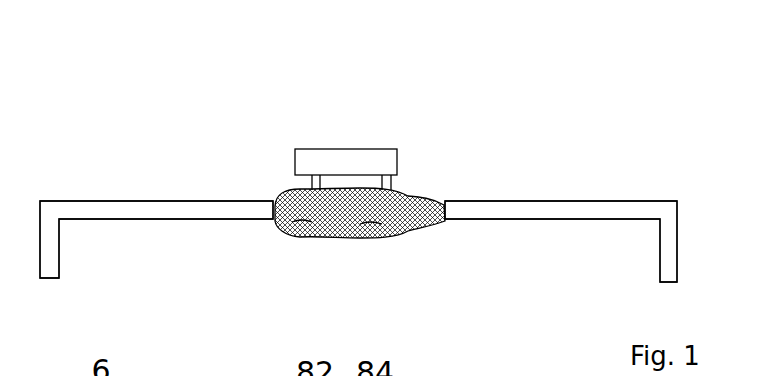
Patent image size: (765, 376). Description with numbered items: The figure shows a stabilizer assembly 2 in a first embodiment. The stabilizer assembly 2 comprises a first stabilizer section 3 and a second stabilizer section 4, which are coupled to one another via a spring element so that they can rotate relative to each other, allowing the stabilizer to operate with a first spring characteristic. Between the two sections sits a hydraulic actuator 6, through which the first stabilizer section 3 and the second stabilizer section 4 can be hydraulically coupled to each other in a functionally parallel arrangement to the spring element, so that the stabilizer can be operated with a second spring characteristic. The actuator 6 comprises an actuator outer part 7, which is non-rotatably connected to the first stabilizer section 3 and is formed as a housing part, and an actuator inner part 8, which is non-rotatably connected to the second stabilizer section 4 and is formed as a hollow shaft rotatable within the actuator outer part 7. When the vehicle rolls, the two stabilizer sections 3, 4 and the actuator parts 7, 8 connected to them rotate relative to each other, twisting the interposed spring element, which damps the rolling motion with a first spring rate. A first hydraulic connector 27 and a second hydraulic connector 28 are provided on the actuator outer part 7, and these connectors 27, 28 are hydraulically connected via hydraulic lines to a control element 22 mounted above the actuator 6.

The stabilizer assembly 2 is at (152, 114).
The first stabilizer section 3 is at (556, 207).
The second stabilizer section 4 is at (132, 210).
The hydraulic actuator 6 is at (350, 265).
The actuator outer part 7 is at (370, 240).
The actuator inner part 8 is at (302, 232).
The control element 22 is at (360, 145).
The first hydraulic connector 27 is at (397, 181).
The second hydraulic connector 28 is at (308, 179).